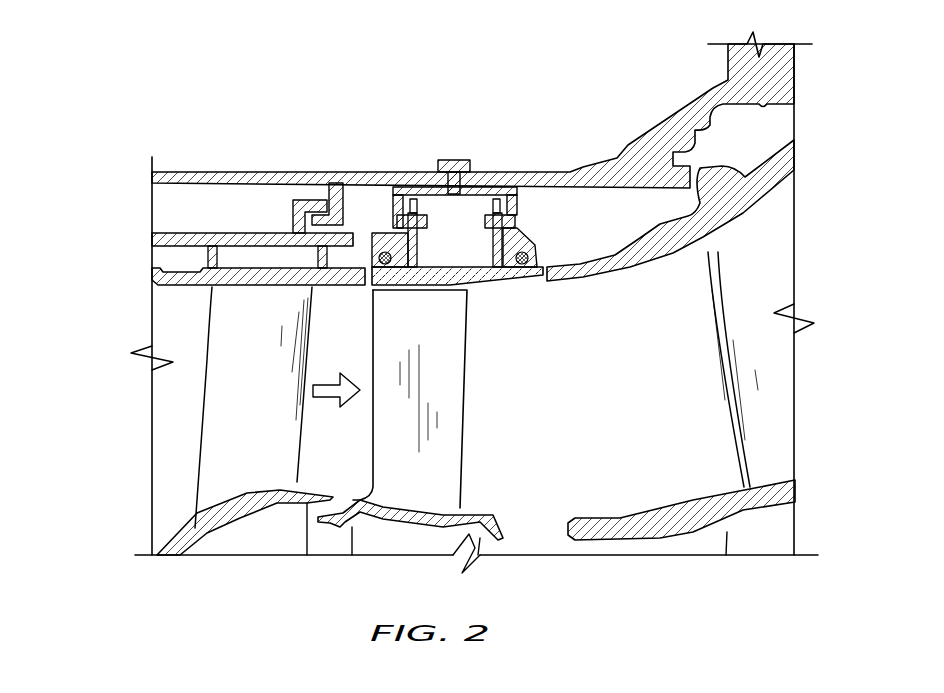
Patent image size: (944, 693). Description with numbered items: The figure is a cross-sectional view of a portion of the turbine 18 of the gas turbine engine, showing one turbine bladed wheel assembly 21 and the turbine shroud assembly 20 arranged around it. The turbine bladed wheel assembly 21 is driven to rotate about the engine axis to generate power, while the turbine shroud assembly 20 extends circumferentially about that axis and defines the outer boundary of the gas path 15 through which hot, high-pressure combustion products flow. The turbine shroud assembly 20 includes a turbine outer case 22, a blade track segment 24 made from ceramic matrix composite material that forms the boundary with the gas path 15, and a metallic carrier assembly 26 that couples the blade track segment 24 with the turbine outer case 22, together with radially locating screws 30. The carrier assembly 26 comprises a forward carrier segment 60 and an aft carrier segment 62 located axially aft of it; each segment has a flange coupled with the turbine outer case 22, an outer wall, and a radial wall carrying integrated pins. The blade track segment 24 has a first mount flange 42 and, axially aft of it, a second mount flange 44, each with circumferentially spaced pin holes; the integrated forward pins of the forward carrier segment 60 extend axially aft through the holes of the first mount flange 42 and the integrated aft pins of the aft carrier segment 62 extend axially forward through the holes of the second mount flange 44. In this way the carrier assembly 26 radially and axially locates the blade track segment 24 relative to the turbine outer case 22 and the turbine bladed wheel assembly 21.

The turbine 18 is at (134, 104).
The turbine shroud assembly 20 is at (486, 153).
The turbine outer case 22 is at (560, 160).
The blade track segment 24 is at (512, 296).
The carrier assembly 26 is at (379, 211).
The radially locating screws 30 is at (412, 192).
The first mount flange 42 is at (410, 246).
The second mount flange 44 is at (499, 196).
The forward carrier segment 60 is at (406, 197).
The aft carrier segment 62 is at (524, 252).
The turbine bladed wheel assembly 21 is at (474, 442).
The gas path 15 is at (313, 390).